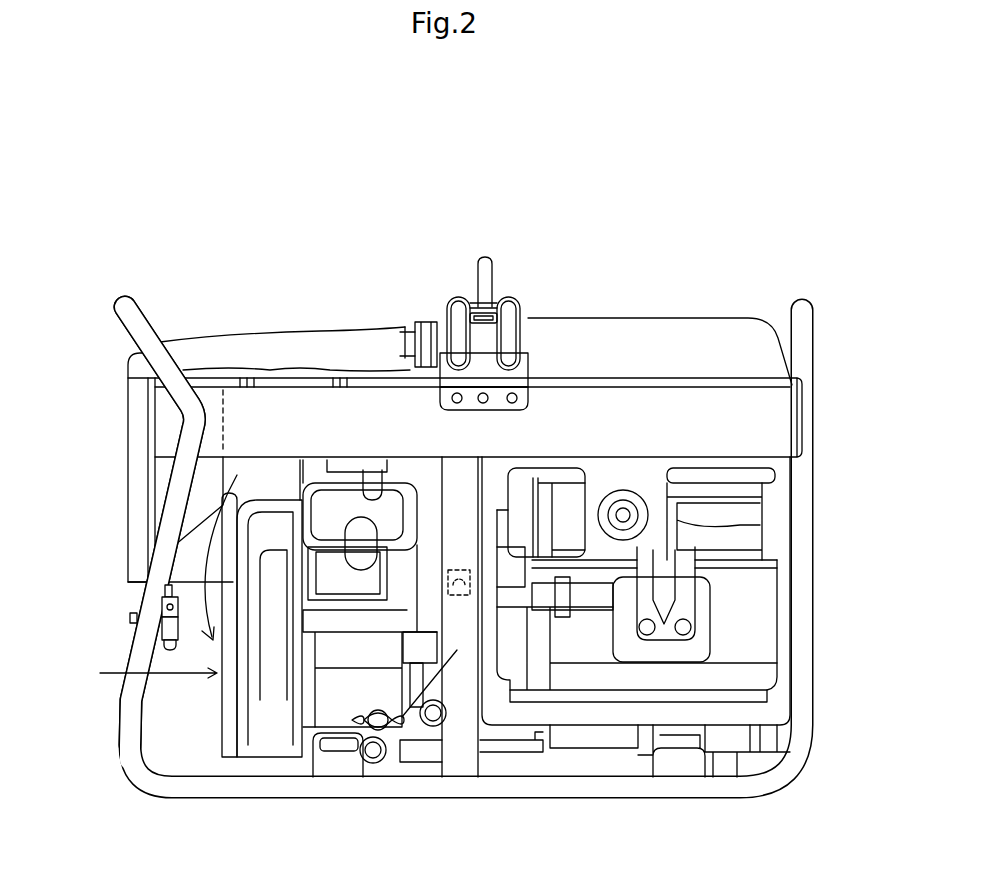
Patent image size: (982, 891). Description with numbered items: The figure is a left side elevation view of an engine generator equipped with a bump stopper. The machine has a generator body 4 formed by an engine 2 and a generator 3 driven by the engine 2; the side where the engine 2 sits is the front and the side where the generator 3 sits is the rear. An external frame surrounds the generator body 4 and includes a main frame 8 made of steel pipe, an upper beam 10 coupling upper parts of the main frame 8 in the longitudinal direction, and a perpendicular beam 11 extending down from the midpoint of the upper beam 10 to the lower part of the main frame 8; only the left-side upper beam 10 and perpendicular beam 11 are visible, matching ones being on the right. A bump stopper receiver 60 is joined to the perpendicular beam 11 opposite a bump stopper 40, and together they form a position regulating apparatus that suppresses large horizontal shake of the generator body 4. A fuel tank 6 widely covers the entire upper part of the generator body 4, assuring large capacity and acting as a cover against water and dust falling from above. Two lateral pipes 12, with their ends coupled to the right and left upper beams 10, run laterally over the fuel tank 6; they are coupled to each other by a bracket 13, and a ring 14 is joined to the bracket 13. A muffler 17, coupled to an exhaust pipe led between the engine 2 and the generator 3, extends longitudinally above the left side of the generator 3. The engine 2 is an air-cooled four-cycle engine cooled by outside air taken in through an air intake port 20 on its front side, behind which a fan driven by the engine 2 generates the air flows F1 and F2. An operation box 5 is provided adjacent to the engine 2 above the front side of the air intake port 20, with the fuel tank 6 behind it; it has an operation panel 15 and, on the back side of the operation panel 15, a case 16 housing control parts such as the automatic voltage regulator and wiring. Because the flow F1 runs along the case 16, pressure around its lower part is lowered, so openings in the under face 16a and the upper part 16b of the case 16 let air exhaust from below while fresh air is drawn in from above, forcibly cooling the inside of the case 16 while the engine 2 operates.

The engine 2 is at (345, 650).
The generator 3 is at (592, 655).
The generator body 4 is at (617, 682).
The operation box 5 is at (128, 452).
The fuel tank 6 is at (645, 330).
The main frame 8 is at (132, 317).
The upper beam 10 is at (697, 400).
The perpendicular beam 11 is at (458, 750).
The lateral pipe 12 is at (462, 313).
The bracket 13 is at (498, 308).
The ring 14 is at (492, 273).
The operation panel 15 is at (147, 520).
The case 16 is at (227, 483).
The under face 16a is at (180, 545).
The upper part 16b is at (162, 378).
The muffler 17 is at (727, 483).
The air intake port 20 is at (200, 706).
The bump stopper 40 is at (402, 717).
The bump stopper receiver 60 is at (460, 597).
The air flow F1 is at (177, 575).
The air flow F2 is at (102, 673).